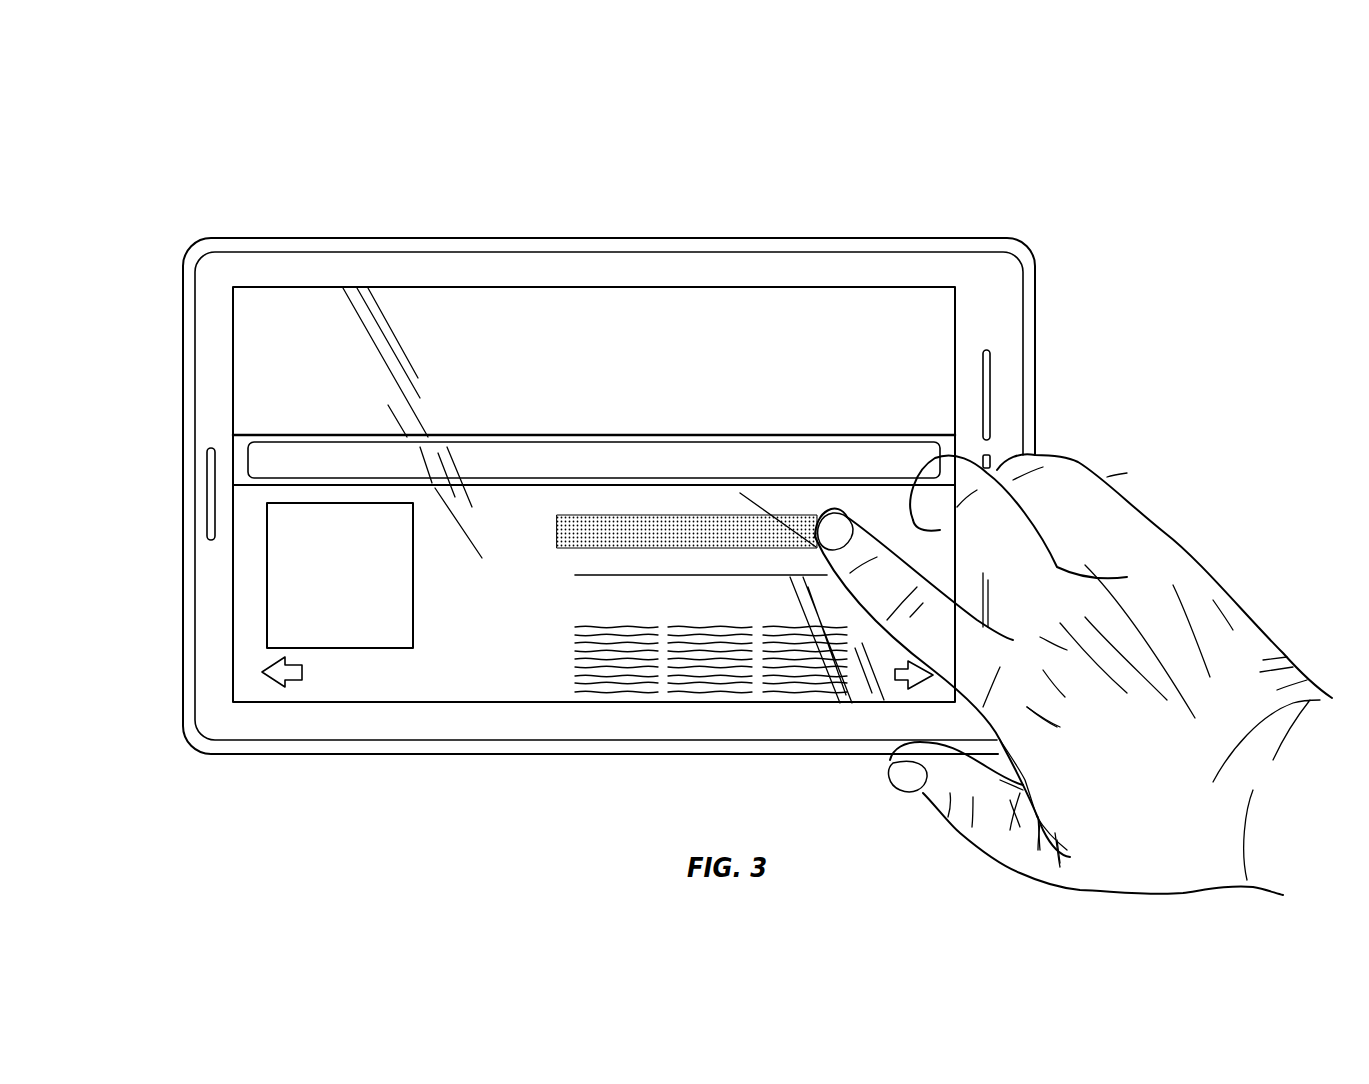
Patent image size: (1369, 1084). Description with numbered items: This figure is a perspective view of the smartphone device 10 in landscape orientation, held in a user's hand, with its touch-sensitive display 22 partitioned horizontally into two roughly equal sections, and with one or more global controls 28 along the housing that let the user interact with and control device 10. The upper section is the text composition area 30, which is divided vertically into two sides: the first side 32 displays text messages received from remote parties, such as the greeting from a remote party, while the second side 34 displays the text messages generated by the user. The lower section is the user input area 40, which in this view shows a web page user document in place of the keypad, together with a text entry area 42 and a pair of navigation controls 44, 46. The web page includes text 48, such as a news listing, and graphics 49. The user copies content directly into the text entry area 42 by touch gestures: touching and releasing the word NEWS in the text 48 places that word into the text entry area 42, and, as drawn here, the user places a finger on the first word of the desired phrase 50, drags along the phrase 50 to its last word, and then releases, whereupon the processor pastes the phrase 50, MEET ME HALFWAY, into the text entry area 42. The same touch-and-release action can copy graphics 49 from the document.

The device 10 is at (882, 128).
The touch-sensitive display 22 is at (428, 202).
The global controls 28 is at (988, 464).
The text composition area 30 is at (223, 370).
The first side 32 is at (313, 285).
The second side 34 is at (900, 290).
The user input area 40 is at (222, 597).
The text entry area 42 is at (863, 460).
The navigation control 44 is at (285, 684).
The navigation control 46 is at (927, 663).
The text 48 is at (553, 630).
The graphics 49 is at (307, 558).
The phrase 50 is at (557, 520).